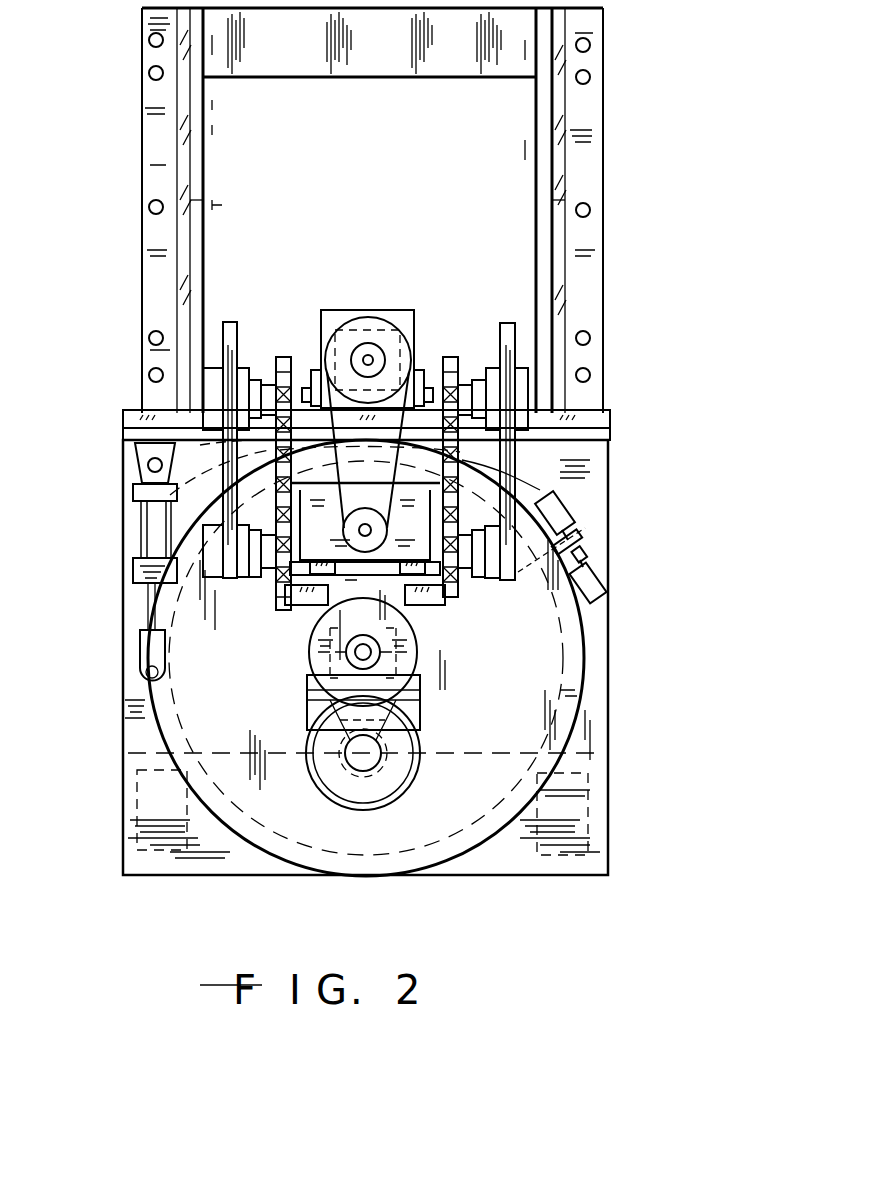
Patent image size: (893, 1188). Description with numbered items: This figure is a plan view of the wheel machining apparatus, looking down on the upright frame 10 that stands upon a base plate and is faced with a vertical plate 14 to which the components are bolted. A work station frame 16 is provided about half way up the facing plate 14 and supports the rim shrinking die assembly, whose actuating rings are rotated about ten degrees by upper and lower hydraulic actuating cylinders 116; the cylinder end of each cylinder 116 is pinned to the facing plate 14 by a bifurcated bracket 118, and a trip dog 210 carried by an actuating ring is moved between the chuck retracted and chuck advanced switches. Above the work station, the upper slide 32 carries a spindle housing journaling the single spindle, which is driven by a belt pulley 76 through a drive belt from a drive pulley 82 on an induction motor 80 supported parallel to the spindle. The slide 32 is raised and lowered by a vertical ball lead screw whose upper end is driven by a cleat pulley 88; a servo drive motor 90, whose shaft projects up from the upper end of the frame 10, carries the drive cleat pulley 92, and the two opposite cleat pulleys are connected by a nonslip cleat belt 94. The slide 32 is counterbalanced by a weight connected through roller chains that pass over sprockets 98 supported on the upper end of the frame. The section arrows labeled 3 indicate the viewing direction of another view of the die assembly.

The upright frame 10 is at (565, 175).
The vertical facing plate 14 is at (123, 418).
The work station frame 16 is at (515, 878).
The upper slide 32 is at (285, 632).
The belt pulley 76 is at (418, 655).
The induction motor 80 is at (425, 778).
The drive pulley 82 is at (380, 805).
The cleat pulley 88 is at (345, 538).
The servo drive motor 90 is at (415, 335).
The drive cleat pulley 92 is at (370, 318).
The nonslip cleat belt 94 is at (372, 500).
The sprockets 98 is at (270, 590).
The hydraulic actuating cylinder 116 is at (133, 530).
The bifurcated bracket 118 is at (140, 457).
The trip dog 210 is at (582, 548).
The section arrow 3 is at (125, 673).